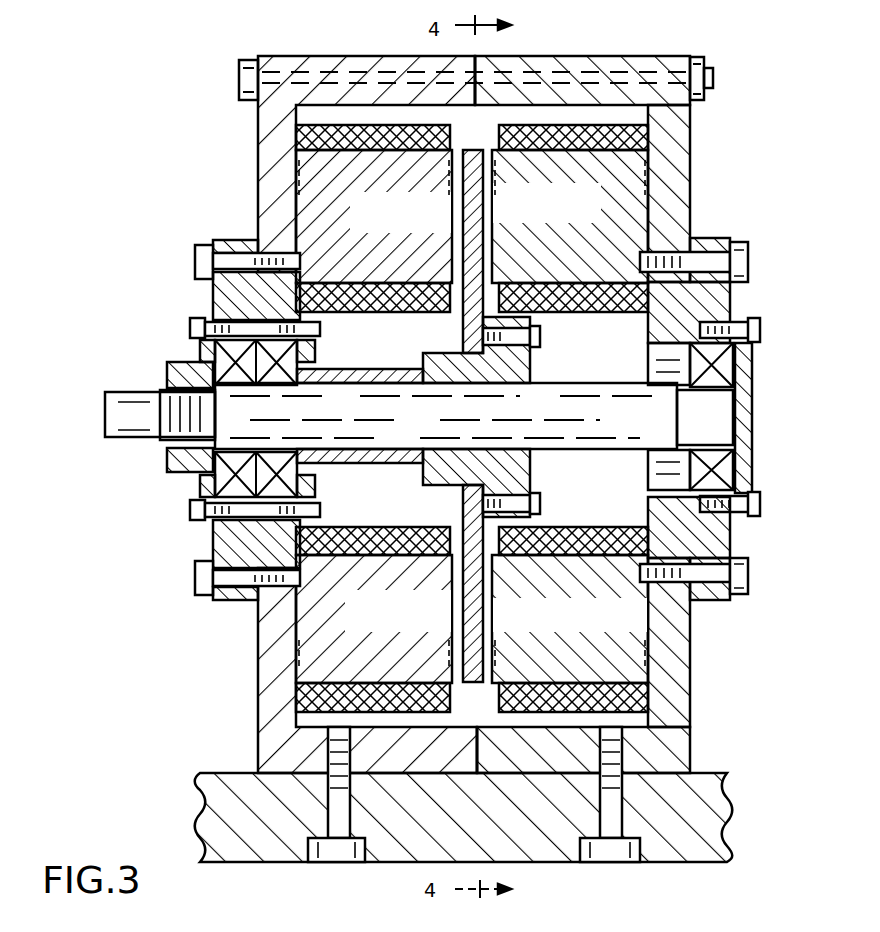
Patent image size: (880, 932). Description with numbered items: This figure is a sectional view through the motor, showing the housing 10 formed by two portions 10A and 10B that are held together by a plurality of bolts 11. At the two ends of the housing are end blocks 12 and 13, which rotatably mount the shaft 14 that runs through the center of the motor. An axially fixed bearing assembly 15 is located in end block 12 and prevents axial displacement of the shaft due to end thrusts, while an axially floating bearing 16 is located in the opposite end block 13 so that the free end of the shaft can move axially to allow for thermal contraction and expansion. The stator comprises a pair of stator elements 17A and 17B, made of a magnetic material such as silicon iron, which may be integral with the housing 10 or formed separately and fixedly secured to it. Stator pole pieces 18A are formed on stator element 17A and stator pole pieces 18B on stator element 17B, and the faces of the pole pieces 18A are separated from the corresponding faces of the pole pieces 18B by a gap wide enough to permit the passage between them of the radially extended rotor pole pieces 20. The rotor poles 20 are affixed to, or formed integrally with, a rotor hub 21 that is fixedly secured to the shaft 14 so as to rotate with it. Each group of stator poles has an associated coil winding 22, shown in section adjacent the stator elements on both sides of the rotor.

The housing 10 is at (583, 42).
The housing portion 10A is at (318, 56).
The housing portion 10B is at (633, 55).
The bolts 11 is at (506, 72).
The end block 12 is at (237, 245).
The end block 13 is at (730, 298).
The shaft 14 is at (122, 440).
The axially fixed bearing assembly 15 is at (158, 360).
The axially floating bearing 16 is at (752, 545).
The stator element 17A is at (313, 181).
The stator element 17B is at (690, 190).
The stator pole pieces 18A is at (450, 192).
The stator pole pieces 18B is at (500, 193).
The rotor pole pieces 20 is at (465, 325).
The rotor hub 21 is at (522, 362).
The coil winding 22 is at (300, 138).